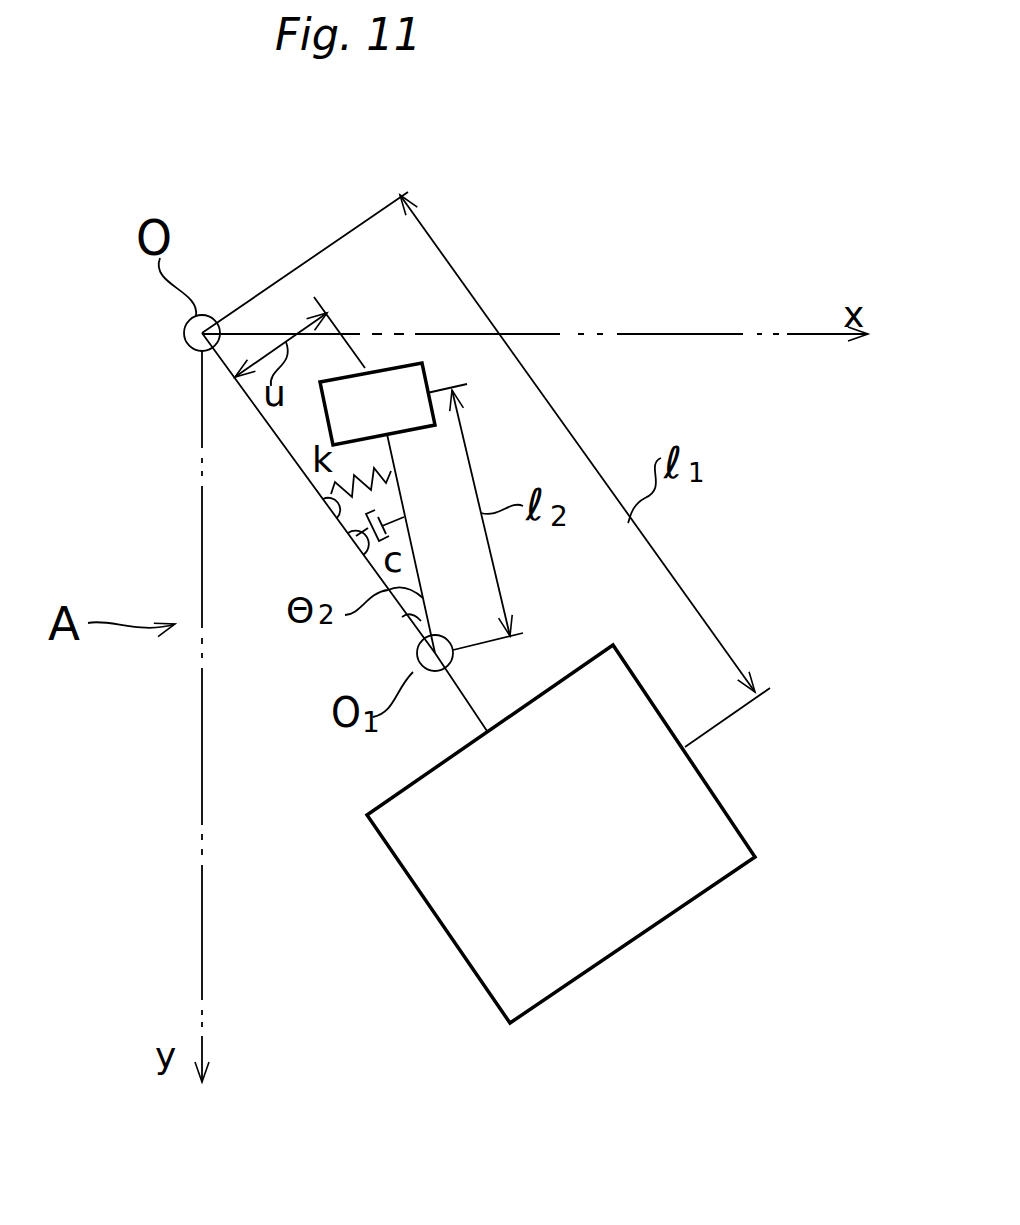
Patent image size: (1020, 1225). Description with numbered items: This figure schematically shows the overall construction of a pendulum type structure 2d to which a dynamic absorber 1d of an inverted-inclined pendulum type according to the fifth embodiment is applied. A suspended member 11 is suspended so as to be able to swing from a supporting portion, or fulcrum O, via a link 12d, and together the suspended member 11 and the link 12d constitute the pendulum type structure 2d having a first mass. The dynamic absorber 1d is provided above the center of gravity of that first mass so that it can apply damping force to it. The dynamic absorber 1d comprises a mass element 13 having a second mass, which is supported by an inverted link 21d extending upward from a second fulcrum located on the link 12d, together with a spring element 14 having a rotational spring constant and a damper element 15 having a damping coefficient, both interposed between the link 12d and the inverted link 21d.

The dynamic absorber 1d is at (519, 434).
The pendulum type structure 2d is at (743, 745).
The suspended member 11 is at (722, 803).
The link 12d is at (470, 707).
The mass element 13 is at (430, 364).
The spring element 14 is at (332, 514).
The damper element 15 is at (360, 556).
The inverted link 21d is at (420, 643).